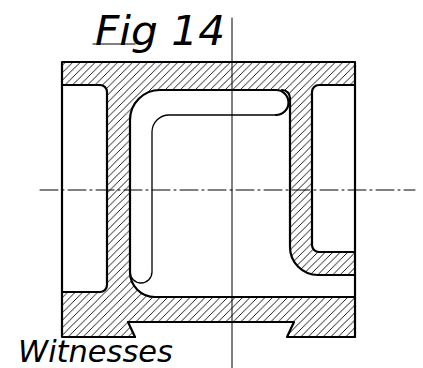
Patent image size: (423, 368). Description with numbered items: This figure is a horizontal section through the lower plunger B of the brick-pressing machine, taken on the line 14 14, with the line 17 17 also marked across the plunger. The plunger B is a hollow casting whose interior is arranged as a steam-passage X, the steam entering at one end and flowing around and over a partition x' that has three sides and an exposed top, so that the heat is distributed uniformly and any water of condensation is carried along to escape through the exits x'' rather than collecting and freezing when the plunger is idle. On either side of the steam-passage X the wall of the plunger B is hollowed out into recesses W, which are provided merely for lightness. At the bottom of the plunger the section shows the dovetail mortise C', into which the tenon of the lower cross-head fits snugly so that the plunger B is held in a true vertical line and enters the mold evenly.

The lower plunger B is at (287, 55).
The mortise C' is at (241, 337).
The recesses W is at (100, 128).
The steam-passage X is at (138, 217).
The partition x' is at (203, 199).
The exits x'' is at (242, 285).
The section line 14 14 is at (218, 191).
The section line 17 17 is at (239, 185).